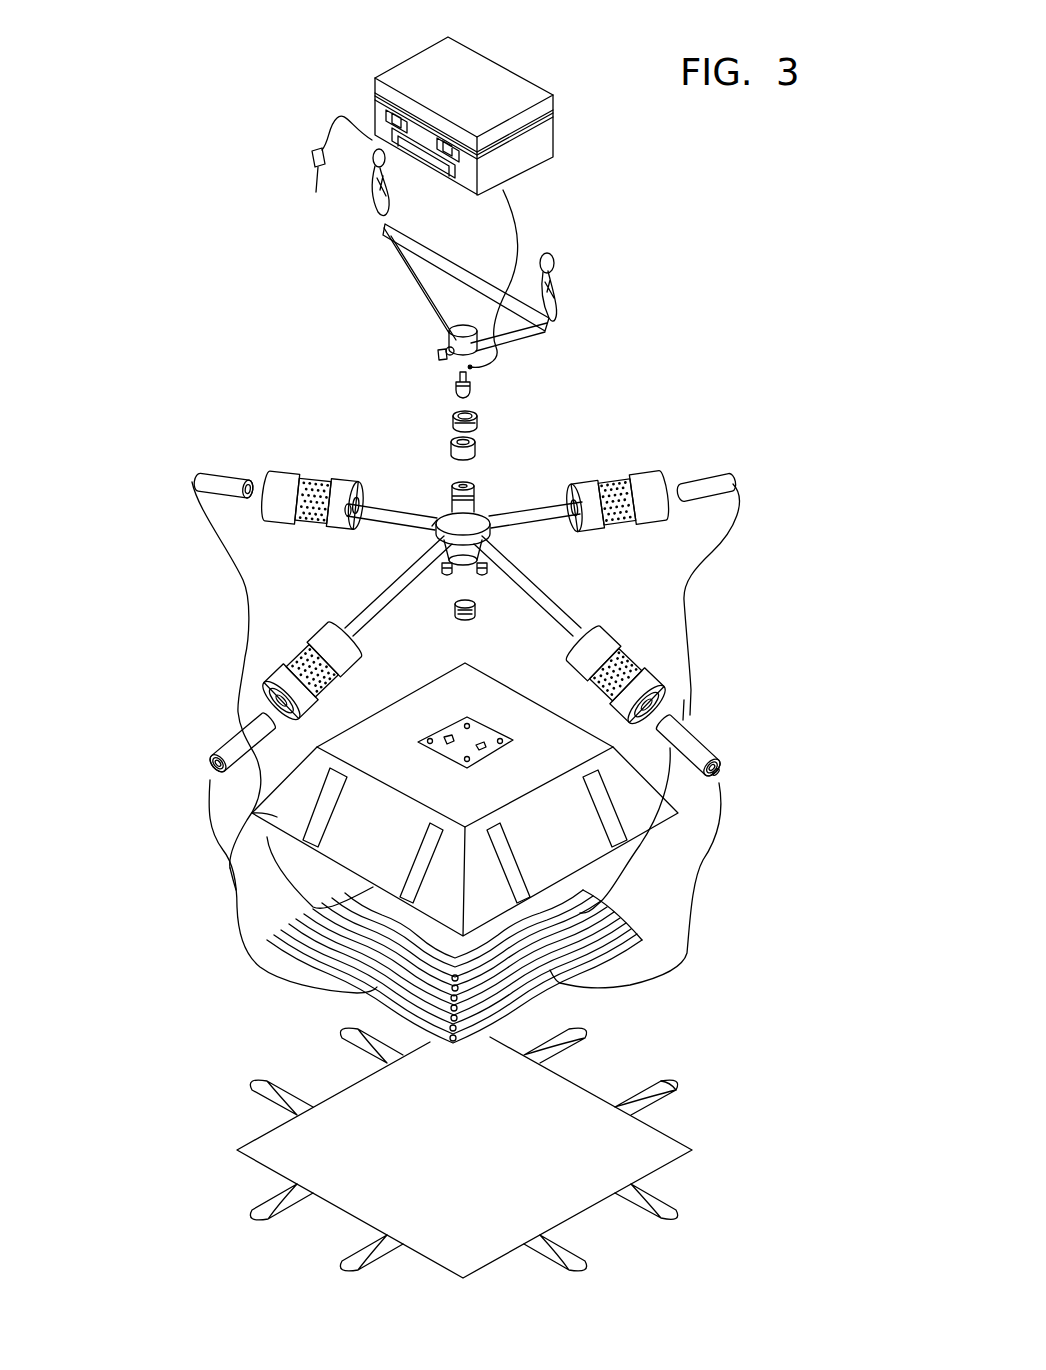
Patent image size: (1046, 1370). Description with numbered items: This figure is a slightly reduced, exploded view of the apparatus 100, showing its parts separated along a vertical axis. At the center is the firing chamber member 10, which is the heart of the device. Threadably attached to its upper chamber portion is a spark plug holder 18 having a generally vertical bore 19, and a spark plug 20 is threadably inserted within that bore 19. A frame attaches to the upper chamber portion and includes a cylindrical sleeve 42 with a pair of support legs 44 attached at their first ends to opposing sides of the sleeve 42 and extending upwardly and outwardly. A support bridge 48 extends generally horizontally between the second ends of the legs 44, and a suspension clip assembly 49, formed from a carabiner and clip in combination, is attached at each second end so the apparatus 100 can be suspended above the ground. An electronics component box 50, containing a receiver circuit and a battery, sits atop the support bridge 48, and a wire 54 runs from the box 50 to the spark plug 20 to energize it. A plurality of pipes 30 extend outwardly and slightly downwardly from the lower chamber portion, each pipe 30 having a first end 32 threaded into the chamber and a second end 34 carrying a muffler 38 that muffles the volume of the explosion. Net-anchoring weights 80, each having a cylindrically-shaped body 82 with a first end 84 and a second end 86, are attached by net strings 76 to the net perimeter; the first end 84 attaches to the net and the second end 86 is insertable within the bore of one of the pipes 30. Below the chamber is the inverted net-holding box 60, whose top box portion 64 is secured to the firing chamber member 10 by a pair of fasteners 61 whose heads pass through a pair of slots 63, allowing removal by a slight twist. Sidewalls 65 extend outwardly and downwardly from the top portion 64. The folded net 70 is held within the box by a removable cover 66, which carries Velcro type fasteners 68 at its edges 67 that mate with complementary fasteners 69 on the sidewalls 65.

The apparatus 100 is at (176, 302).
The electronics component box 50 is at (484, 73).
The wire 54 is at (512, 212).
The support bridge 48 is at (408, 240).
The support legs 44 is at (412, 278).
The suspension clip assembly 49 is at (554, 267).
The cylindrical sleeve 42 is at (446, 349).
The spark plug 20 is at (477, 387).
The bore 19 is at (451, 419).
The spark plug holder 18 is at (480, 447).
The firing chamber member 10 is at (483, 520).
The pipes 30 is at (377, 505).
The first end 32 is at (430, 528).
The second end 34 is at (352, 514).
The muffler 38 is at (318, 485).
The net-anchoring weights 80 is at (233, 478).
The cylindrically-shaped body 82 is at (700, 740).
The first end 84 is at (685, 702).
The second end 86 is at (728, 772).
The net strings 76 is at (238, 583).
The fasteners 61 is at (447, 578).
The slots 63 is at (449, 727).
The net-holding box 60 is at (503, 710).
The top box portion 64 is at (393, 737).
The sidewalls 65 is at (230, 868).
The complementary fasteners 69 is at (615, 824).
The net 70 is at (370, 990).
The removable cover 66 is at (277, 1147).
The edges 67 is at (582, 1083).
The Velcro type fasteners 68 is at (668, 1092).